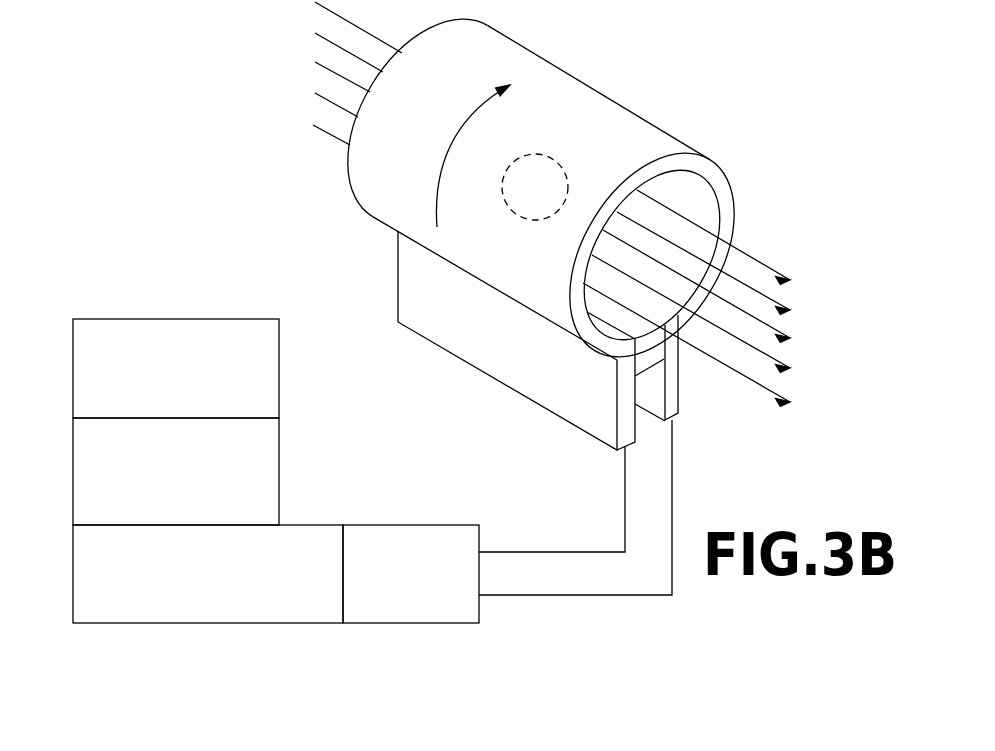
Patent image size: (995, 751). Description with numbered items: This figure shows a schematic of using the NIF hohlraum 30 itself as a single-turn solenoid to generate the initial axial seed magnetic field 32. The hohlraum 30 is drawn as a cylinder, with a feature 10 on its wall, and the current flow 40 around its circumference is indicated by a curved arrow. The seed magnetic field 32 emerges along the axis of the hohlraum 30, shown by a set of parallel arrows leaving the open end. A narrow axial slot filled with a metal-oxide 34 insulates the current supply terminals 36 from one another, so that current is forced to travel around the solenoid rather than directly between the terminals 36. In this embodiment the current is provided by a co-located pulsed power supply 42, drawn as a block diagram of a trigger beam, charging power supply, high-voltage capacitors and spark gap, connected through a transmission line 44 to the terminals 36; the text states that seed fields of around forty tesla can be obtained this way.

The aperture / beam spot 10 is at (563, 168).
The hohlraum 30 is at (580, 76).
The initial axial seed magnetic field 32 is at (799, 255).
The metal-oxide 34 is at (648, 350).
The current supply terminals 36 is at (607, 425).
The current flow 40 is at (437, 197).
The co-located pulsed power supply 42 is at (167, 313).
The transmission line 44 is at (557, 595).